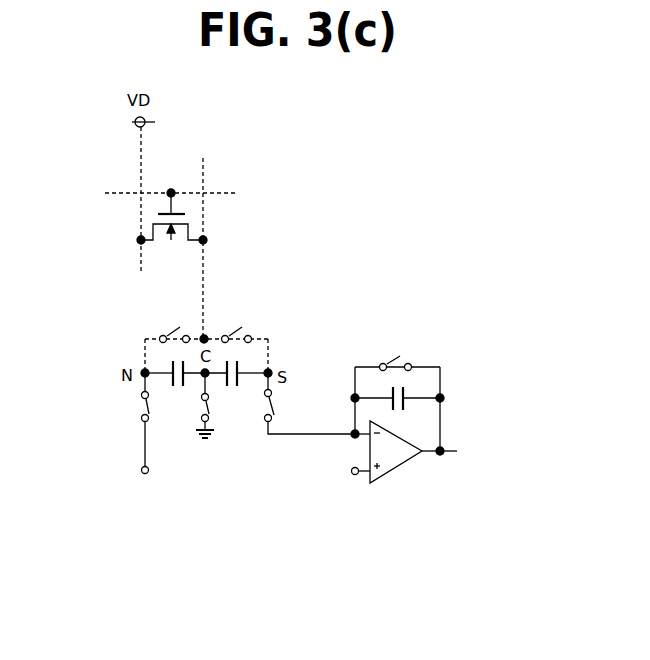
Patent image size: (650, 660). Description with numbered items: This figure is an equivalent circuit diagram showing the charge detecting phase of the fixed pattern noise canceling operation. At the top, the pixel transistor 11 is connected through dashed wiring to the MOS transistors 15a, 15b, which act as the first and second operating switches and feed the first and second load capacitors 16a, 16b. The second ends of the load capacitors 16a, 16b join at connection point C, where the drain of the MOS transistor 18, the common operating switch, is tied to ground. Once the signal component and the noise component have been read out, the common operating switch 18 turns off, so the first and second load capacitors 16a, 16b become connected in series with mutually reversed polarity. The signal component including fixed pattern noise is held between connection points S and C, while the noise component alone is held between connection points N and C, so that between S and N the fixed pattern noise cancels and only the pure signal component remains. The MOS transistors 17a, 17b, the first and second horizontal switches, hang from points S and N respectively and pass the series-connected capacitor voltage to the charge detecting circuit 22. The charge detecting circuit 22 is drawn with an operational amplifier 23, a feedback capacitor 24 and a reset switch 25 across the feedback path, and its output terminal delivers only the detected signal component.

The pixel transistor 11 is at (171, 253).
The first operating switch 15a is at (237, 326).
The second operating switch 15b is at (172, 325).
The first load capacitor 16a is at (178, 390).
The second load capacitor 16b is at (233, 390).
The first horizontal switch 17a is at (277, 412).
The second horizontal switch 17b is at (125, 407).
The common operating switch 18 is at (212, 408).
The charge detecting circuit 22 is at (418, 407).
The operational amplifier 23 is at (398, 453).
The feedback capacitor 24 is at (398, 418).
The reset switch 25 is at (390, 355).